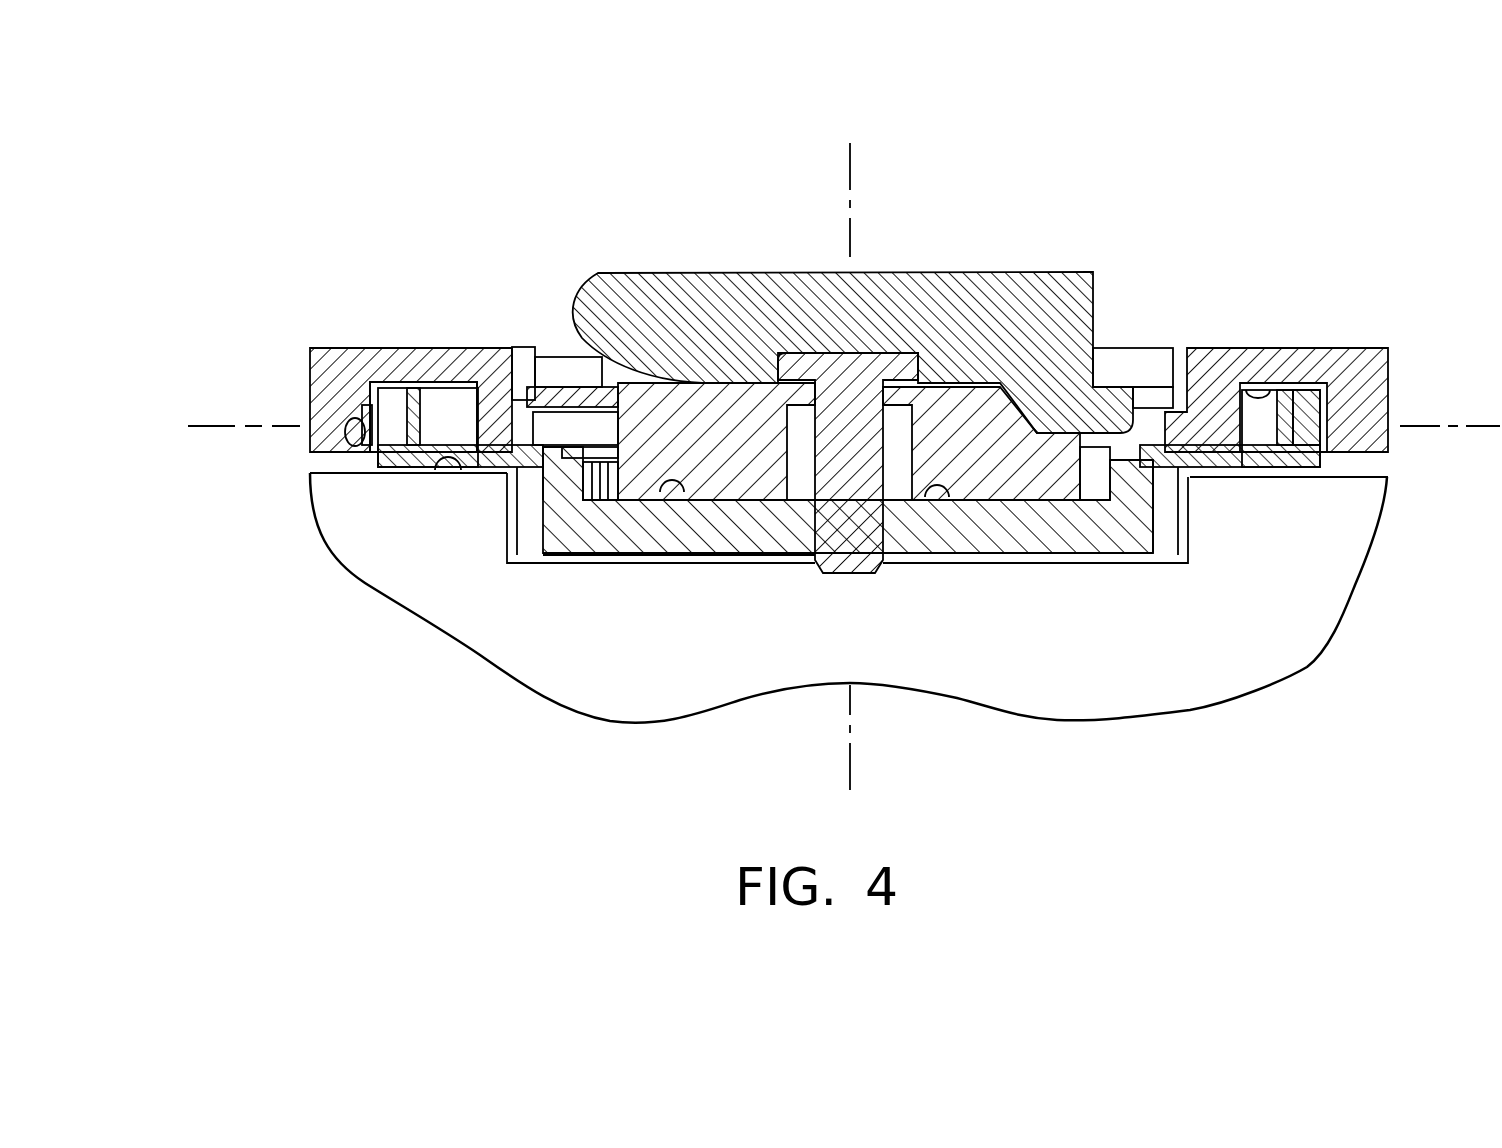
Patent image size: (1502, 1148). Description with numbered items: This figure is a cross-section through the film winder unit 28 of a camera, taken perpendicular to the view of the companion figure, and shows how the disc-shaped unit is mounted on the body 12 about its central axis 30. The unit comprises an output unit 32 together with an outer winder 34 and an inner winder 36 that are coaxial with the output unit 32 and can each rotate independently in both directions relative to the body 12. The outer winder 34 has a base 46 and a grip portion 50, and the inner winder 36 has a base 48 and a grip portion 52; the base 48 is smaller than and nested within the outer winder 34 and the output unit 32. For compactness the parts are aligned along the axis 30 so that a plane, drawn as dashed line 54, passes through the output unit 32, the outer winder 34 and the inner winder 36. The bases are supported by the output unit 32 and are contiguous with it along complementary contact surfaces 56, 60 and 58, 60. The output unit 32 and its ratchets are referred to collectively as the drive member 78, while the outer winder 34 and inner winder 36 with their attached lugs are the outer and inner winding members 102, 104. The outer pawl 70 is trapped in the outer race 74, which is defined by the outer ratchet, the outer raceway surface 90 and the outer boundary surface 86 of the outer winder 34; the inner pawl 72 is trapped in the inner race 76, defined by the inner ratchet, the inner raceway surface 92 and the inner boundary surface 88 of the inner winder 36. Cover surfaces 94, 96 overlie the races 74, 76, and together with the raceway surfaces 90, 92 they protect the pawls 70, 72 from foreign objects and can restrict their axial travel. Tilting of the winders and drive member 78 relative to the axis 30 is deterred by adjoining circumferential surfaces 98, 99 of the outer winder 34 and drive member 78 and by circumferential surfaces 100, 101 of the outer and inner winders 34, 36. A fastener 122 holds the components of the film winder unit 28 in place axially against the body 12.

The body 12 is at (392, 598).
The film winder unit 28 is at (326, 368).
The central axis 30 is at (855, 152).
The output unit 32 is at (835, 532).
The outer winder 34 is at (764, 432).
The inner winder 36 is at (861, 297).
The base of outer winder 46 is at (1193, 477).
The base of inner winder 48 is at (672, 272).
The grip portion of outer winder 50 is at (340, 348).
The grip portion of inner winder 52 is at (861, 297).
The geometric plane 54 is at (1345, 272).
The contact surface of outer winder 56 is at (475, 470).
The contact surface of inner winder 58 is at (770, 530).
The contact surface of output unit 60 is at (447, 470).
The outer pawl 70 is at (392, 384).
The inner pawl 72 is at (585, 490).
The outer race 74 is at (437, 390).
The inner race 76 is at (1157, 495).
The drive member 78 is at (960, 555).
The outer boundary surface 86 is at (466, 395).
The inner boundary surface 88 is at (597, 500).
The outer raceway surface 90 is at (380, 472).
The inner raceway surface 92 is at (625, 492).
The outer cover surface 94 is at (1268, 388).
The inner cover surface 96 is at (1140, 385).
The circumferential surface of outer winder 98 is at (360, 425).
The circumferential surface of drive member 99 is at (348, 448).
The circumferential surface of outer winder 100 is at (548, 370).
The circumferential surface of inner winder 101 is at (560, 378).
The outer winding member 102 is at (764, 432).
The inner winding member 104 is at (861, 297).
The fastener 122 is at (895, 350).